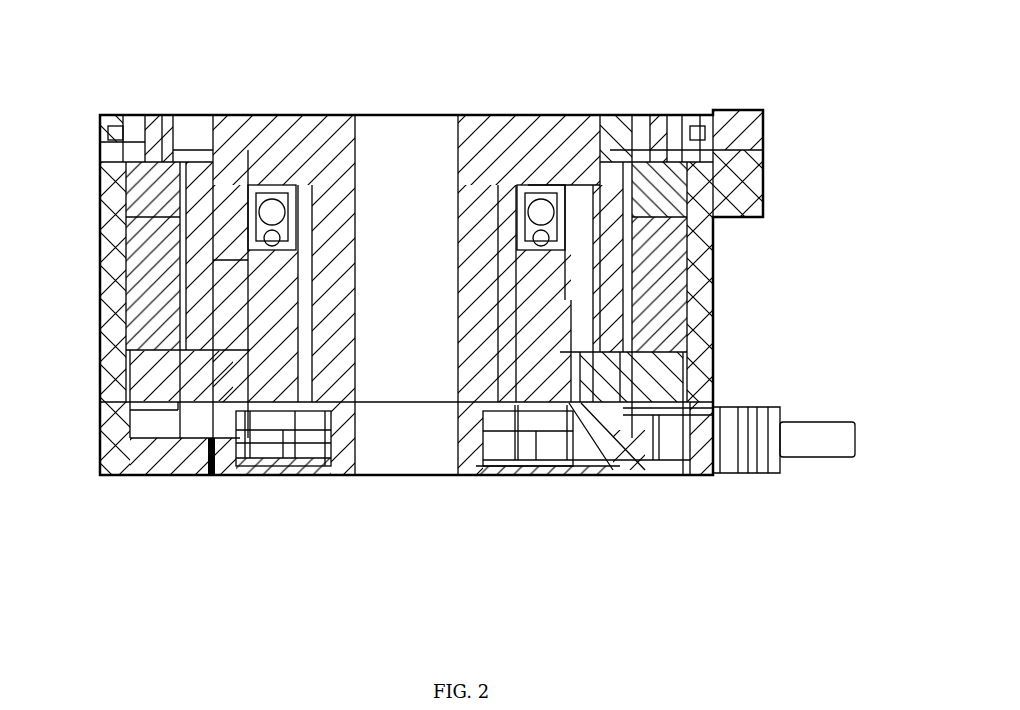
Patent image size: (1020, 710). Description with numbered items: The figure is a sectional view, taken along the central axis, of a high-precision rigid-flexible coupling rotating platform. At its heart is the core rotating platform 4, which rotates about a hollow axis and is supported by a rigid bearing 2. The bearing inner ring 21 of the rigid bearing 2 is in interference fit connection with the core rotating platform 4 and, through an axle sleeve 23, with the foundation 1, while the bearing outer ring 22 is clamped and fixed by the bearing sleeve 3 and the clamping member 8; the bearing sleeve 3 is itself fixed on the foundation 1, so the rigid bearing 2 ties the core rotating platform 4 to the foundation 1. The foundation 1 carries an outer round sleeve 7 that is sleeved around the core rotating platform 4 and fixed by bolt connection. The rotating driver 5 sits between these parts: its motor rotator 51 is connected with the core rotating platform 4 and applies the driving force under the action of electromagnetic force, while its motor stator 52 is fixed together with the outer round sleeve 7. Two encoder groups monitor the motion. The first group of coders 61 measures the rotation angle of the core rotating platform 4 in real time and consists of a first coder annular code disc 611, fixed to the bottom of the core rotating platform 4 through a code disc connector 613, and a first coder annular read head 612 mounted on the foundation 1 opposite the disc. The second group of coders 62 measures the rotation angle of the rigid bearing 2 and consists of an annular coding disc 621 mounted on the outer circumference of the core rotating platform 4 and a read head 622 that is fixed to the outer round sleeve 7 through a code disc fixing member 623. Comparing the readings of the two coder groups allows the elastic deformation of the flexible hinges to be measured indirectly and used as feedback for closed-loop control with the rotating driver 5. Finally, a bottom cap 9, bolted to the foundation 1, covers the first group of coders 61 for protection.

The foundation 1 is at (697, 473).
The rigid bearing 2 is at (312, 129).
The bearing inner ring 21 is at (330, 195).
The bearing outer ring 22 is at (290, 195).
The axle sleeve 23 is at (277, 473).
The bearing sleeve 3 is at (126, 210).
The core rotating platform 4 is at (528, 145).
The rotating driver 5 is at (192, 345).
The motor rotator 51 is at (200, 280).
The motor stator 52 is at (130, 305).
The first group of coders 61 is at (590, 463).
The first coder annular code disc 611 is at (528, 473).
The first coder annular read head 612 is at (558, 473).
The code disc connector 613 is at (468, 473).
The second group of coders 62 is at (800, 130).
The annular coding disc 621 is at (713, 110).
The read head 622 is at (742, 118).
The code disc fixing member 623 is at (763, 167).
The outer round sleeve 7 is at (705, 300).
The clamping member 8 is at (262, 170).
The bottom cap 9 is at (298, 473).